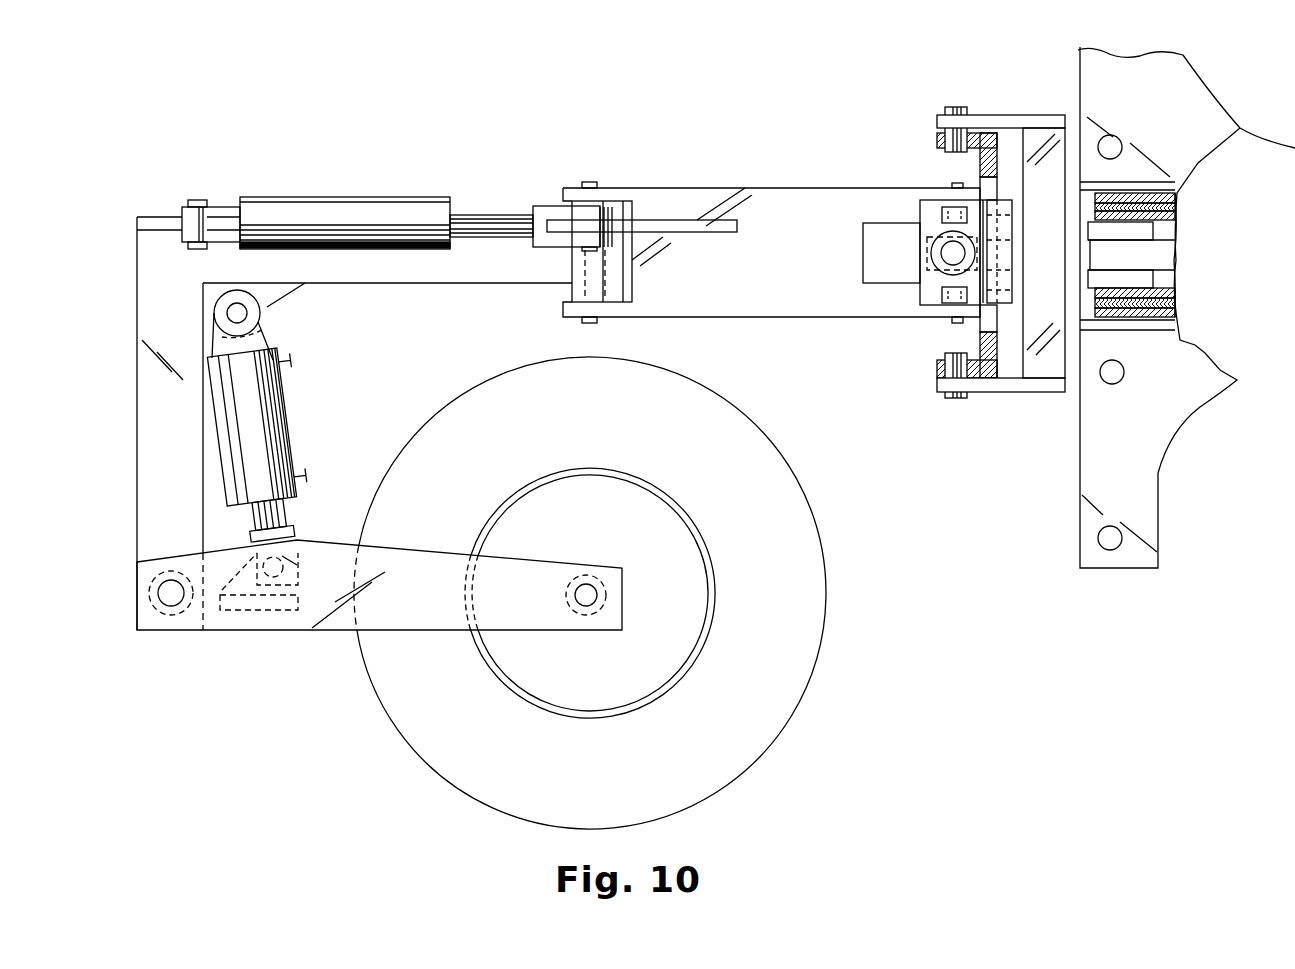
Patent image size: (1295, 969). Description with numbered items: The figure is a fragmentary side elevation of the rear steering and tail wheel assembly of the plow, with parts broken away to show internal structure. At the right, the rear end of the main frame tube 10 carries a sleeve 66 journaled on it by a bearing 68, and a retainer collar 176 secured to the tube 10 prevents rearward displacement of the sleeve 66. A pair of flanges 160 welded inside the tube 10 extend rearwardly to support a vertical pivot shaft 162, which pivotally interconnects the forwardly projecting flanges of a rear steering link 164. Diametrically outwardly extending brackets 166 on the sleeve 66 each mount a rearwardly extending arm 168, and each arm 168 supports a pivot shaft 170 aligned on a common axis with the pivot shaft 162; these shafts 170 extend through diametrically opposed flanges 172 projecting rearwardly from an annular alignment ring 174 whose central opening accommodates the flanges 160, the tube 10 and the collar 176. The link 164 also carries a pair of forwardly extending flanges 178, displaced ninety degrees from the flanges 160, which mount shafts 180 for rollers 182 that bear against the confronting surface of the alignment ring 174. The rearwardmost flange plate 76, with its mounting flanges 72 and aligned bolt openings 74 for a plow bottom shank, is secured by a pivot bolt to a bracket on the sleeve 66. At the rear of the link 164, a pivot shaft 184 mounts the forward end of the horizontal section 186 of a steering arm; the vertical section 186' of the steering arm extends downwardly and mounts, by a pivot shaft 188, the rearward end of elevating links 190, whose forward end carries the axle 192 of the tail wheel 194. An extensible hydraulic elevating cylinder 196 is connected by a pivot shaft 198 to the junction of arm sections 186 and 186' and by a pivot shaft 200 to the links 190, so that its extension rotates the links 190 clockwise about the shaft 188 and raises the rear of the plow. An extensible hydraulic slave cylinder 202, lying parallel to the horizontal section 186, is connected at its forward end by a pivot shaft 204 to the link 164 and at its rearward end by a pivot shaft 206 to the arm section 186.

The main frame tube 10 is at (1170, 222).
The sleeve 66 is at (1178, 199).
The bearing 68 is at (1178, 212).
The mounting flanges 72 is at (1195, 120).
The aligned openings 74 is at (1115, 145).
The flange plate 76 is at (1178, 187).
The flanges 160 is at (1135, 278).
The vertical pivot shaft 162 is at (975, 183).
The rear steering link 164 is at (780, 188).
The brackets 166 is at (1035, 135).
The arms 168 is at (1020, 115).
The pivot shafts 170 is at (955, 107).
The flanges 172 is at (937, 140).
The annular alignment ring 174 is at (975, 170).
The retainer collar 176 is at (1012, 255).
The flanges 178 is at (880, 283).
The shafts 180 is at (935, 262).
The rollers 182 is at (945, 250).
The pivot shaft 184 is at (592, 182).
The horizontal section of steering arm 186 is at (387, 449).
The vertical section of steering arm 186' is at (129, 423).
The pivot shaft 188 is at (172, 606).
The elevating links 190 is at (310, 620).
The axle 192 is at (598, 594).
The tail wheel 194 is at (827, 513).
The hydraulic elevating cylinder 196 is at (300, 400).
The pivot shaft 198 is at (248, 313).
The pivot shaft 200 is at (318, 545).
The hydraulic slave cylinder 202 is at (328, 197).
The pivot shaft 204 is at (580, 268).
The pivot shaft 206 is at (201, 200).